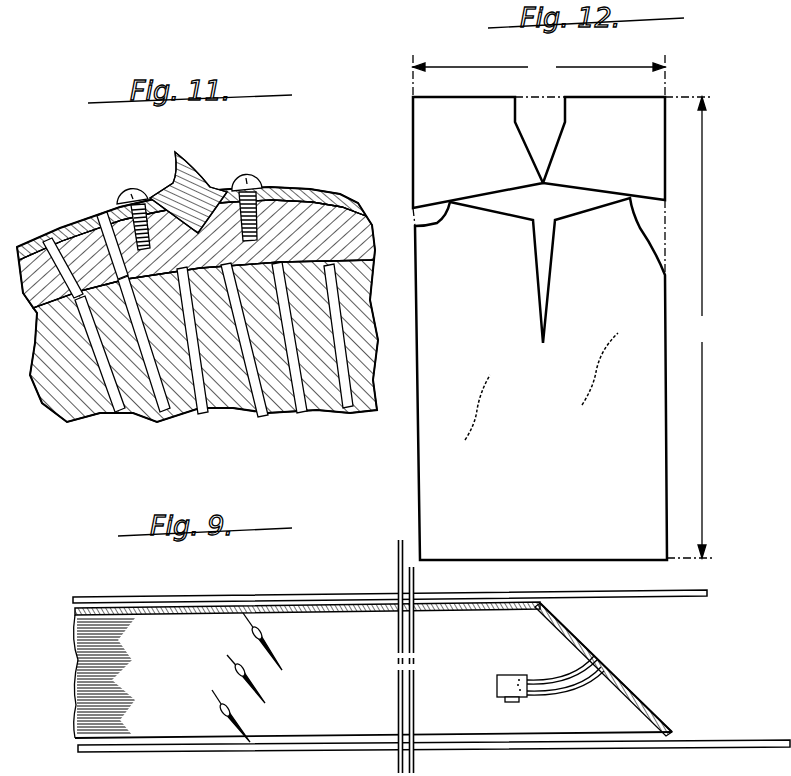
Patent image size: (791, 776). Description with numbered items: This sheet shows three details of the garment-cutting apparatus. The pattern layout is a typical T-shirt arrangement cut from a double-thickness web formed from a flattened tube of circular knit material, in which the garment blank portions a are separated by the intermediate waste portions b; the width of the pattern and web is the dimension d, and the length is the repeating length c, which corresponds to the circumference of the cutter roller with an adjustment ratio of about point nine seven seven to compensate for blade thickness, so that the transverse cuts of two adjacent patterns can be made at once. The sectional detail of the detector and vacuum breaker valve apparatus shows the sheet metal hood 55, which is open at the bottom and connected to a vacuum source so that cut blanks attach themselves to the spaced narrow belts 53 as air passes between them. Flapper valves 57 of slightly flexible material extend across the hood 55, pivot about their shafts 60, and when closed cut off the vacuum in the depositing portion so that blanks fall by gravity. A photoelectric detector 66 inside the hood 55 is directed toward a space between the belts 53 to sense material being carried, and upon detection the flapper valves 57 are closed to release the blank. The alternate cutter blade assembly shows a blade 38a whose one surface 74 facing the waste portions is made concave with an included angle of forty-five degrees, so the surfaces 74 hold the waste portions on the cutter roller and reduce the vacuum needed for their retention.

In FIG. 11, the concave surface 74 is at (177, 173).
In FIG. 11, the cutter blade 38a is at (207, 182).
In FIG. 9, the narrow belts 53 is at (175, 583).
In FIG. 9, the sheet metal hood 55 is at (563, 627).
In FIG. 9, the flapper valves 57 is at (247, 733).
In FIG. 9, the shafts 60 is at (252, 633).
In FIG. 9, the photoelectric detector 66 is at (518, 676).
In FIG. 12, the garment blank portions a is at (532, 306).
In FIG. 12, the intermediate waste portions b is at (536, 173).
In FIG. 12, the repeating length c is at (700, 327).
In FIG. 12, the pattern width d is at (539, 69).